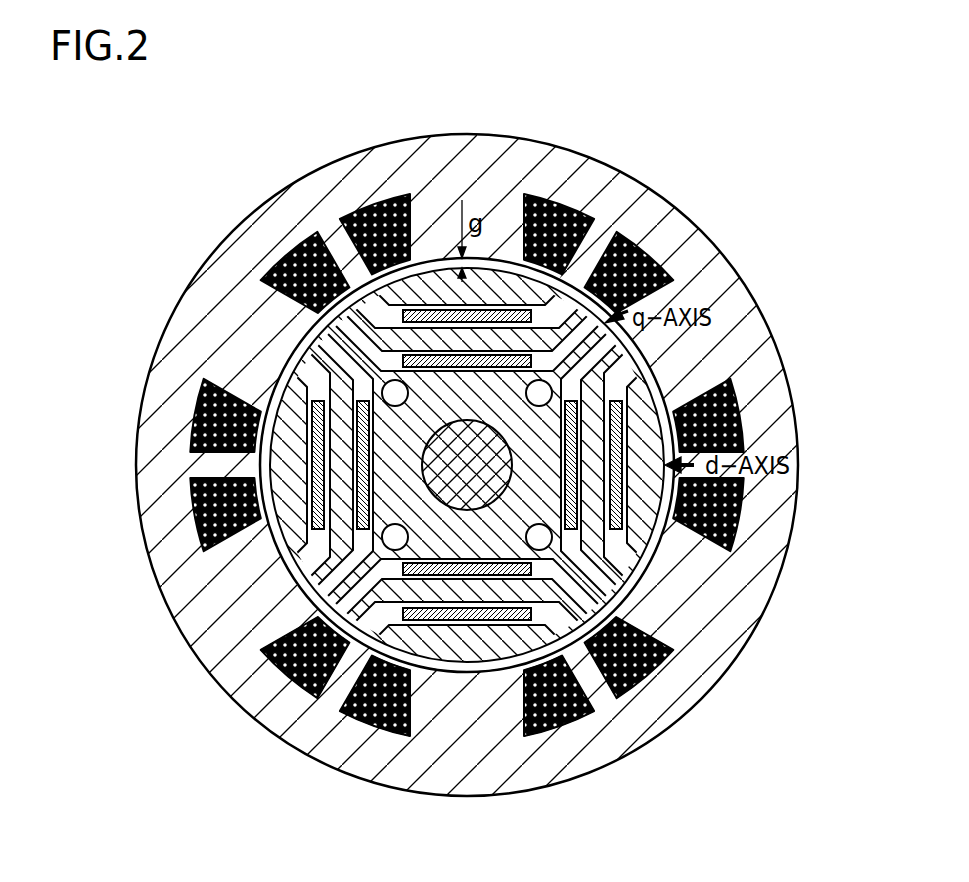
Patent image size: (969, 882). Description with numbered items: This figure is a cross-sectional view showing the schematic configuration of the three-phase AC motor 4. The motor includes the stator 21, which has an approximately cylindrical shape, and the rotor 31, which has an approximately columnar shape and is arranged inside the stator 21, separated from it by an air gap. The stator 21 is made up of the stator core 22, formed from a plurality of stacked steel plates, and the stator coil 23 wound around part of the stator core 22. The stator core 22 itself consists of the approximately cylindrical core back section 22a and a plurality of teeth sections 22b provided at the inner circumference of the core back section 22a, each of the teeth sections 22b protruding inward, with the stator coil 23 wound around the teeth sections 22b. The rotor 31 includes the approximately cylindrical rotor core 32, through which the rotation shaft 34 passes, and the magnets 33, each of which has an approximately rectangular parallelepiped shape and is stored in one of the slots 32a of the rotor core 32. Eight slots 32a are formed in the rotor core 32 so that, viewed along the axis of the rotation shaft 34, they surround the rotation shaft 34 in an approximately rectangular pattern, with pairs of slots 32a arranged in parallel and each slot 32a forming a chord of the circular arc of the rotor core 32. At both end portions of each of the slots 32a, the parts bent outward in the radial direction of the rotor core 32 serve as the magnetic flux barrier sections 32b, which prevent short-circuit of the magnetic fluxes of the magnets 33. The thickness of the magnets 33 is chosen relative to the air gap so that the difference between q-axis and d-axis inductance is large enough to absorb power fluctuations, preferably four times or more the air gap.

The three-phase AC motor 4 is at (176, 220).
The stator 21 is at (156, 317).
The stator core 22 is at (134, 405).
The core back section 22a is at (160, 453).
The teeth sections 22b is at (250, 590).
The stator coil 23 is at (315, 615).
The rotor 31 is at (650, 387).
The rotor core 32 is at (465, 642).
The slots 32a is at (558, 623).
The magnetic flux barrier sections 32b is at (327, 704).
The magnets 33 is at (618, 512).
The rotation shaft 34 is at (470, 452).